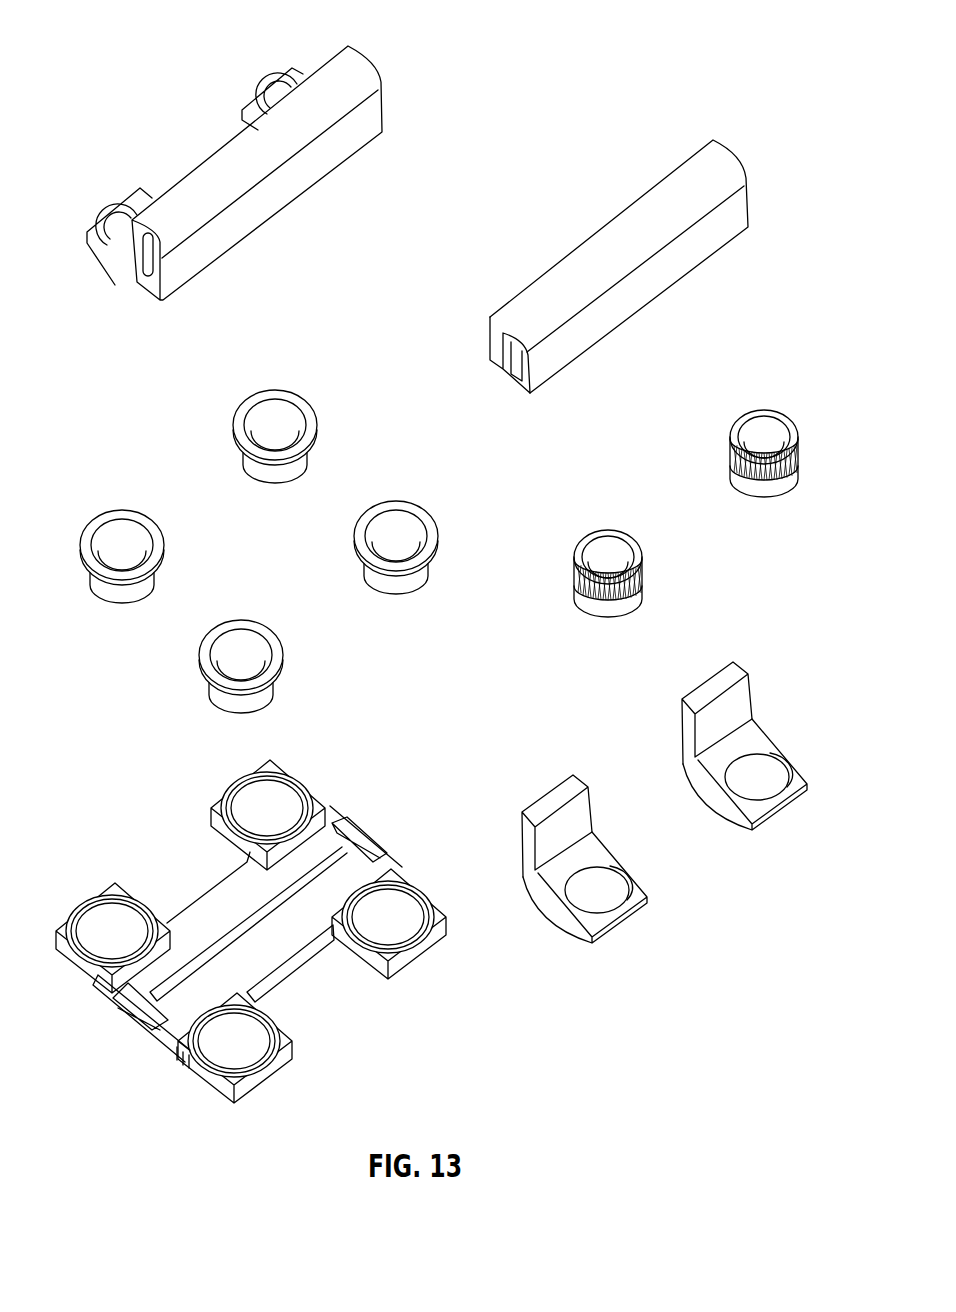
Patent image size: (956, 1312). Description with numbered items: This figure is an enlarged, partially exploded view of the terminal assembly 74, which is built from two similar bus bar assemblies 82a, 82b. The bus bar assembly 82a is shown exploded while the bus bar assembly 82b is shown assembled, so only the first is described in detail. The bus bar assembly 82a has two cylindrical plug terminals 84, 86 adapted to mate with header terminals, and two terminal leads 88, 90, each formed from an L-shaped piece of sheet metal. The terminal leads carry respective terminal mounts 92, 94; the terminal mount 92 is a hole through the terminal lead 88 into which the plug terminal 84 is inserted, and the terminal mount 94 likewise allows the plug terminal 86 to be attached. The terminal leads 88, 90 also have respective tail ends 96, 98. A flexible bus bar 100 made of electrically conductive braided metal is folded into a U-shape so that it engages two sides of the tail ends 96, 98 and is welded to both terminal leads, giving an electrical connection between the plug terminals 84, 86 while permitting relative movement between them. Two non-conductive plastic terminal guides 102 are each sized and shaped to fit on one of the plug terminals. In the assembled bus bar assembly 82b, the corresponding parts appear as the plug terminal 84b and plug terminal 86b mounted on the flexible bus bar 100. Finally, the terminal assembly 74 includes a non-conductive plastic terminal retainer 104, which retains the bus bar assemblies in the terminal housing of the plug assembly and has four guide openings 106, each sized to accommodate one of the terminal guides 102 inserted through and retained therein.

The terminal assembly 74 is at (124, 82).
The bus bar assembly 82a is at (753, 82).
The bus bar assembly 82b is at (398, 33).
The plug terminal 84 is at (625, 538).
The end clip 84b is at (117, 207).
The plug terminal 86 is at (777, 413).
The top clip 86b is at (263, 88).
The terminal lead 88 is at (595, 838).
The terminal lead 90 is at (743, 730).
The terminal mount 92 is at (610, 877).
The terminal mount 94 is at (773, 757).
The tail end 96 is at (573, 774).
The tail end 98 is at (740, 658).
The flexible bus bar 100 is at (267, 200).
The terminal guide 102 is at (293, 400).
The terminal retainer 104 is at (340, 812).
The guide opening 106 is at (283, 770).